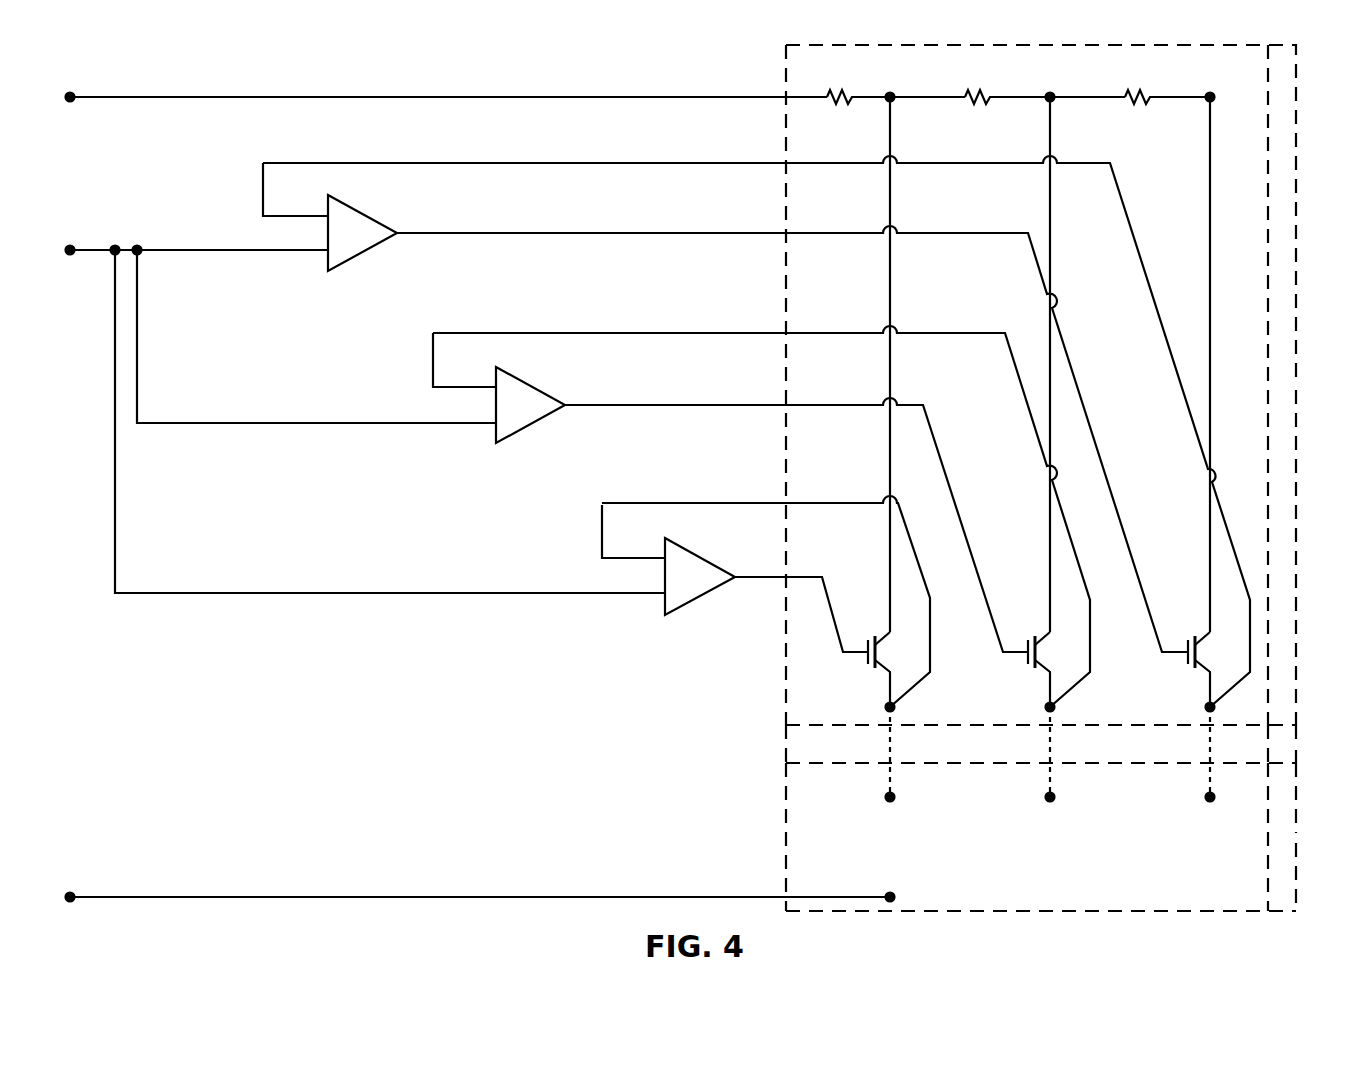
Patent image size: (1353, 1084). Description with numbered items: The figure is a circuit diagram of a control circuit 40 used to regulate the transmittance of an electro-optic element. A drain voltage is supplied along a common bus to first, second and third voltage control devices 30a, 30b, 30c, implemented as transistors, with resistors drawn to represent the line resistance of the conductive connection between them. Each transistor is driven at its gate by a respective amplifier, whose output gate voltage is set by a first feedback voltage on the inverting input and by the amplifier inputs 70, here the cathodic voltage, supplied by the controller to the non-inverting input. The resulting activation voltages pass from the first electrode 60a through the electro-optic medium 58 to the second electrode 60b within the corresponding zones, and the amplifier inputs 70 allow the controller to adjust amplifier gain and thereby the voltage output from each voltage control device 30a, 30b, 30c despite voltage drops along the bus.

The control circuit 40 is at (283, 914).
The amplifier inputs 70 is at (106, 195).
The first voltage control device 30a is at (872, 684).
The second voltage control device 30b is at (1032, 684).
The third voltage control device 30c is at (1192, 684).
The electro-optic medium 58 is at (1296, 740).
The first electrode 60a is at (1296, 380).
The second electrode 60b is at (1296, 833).